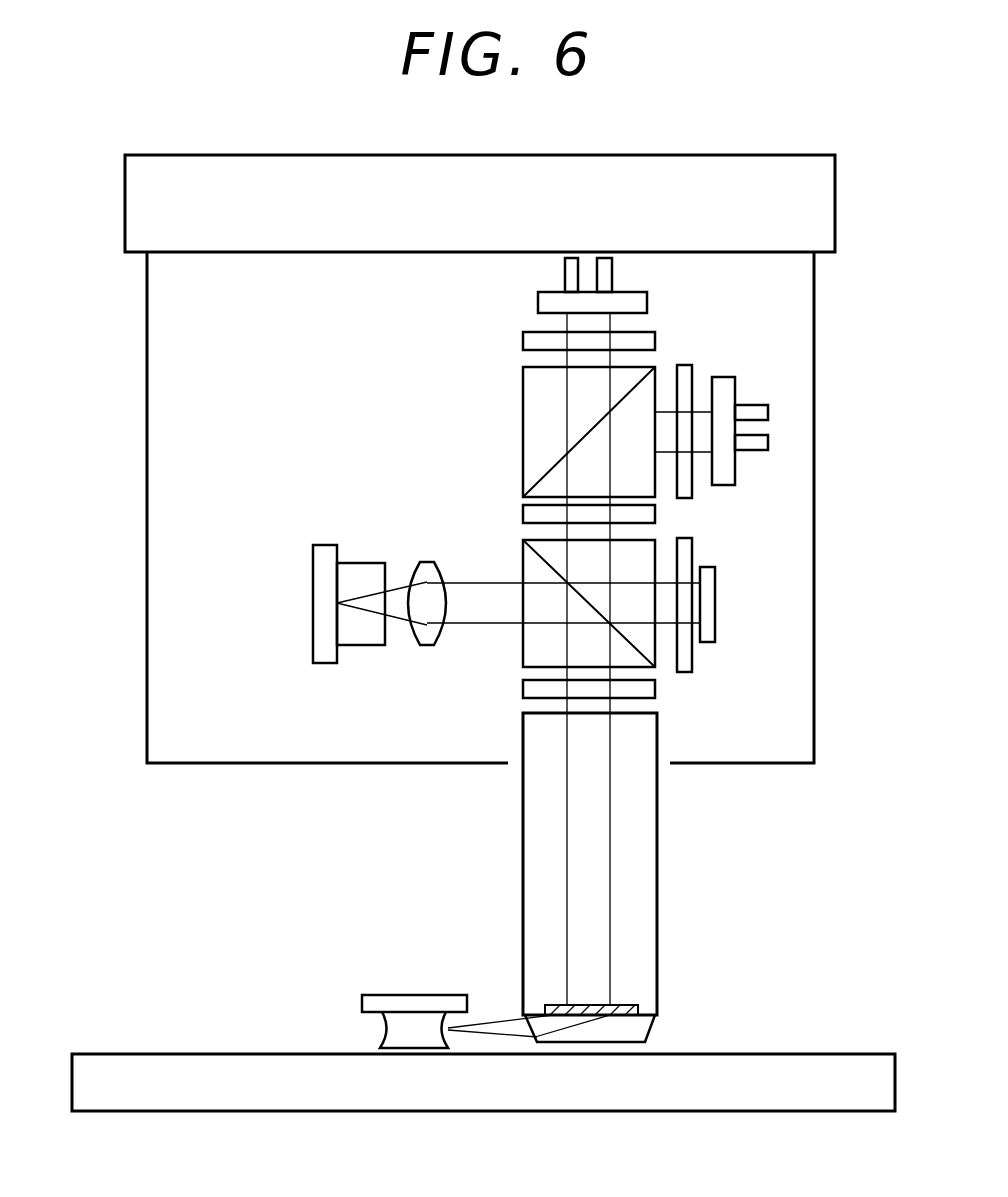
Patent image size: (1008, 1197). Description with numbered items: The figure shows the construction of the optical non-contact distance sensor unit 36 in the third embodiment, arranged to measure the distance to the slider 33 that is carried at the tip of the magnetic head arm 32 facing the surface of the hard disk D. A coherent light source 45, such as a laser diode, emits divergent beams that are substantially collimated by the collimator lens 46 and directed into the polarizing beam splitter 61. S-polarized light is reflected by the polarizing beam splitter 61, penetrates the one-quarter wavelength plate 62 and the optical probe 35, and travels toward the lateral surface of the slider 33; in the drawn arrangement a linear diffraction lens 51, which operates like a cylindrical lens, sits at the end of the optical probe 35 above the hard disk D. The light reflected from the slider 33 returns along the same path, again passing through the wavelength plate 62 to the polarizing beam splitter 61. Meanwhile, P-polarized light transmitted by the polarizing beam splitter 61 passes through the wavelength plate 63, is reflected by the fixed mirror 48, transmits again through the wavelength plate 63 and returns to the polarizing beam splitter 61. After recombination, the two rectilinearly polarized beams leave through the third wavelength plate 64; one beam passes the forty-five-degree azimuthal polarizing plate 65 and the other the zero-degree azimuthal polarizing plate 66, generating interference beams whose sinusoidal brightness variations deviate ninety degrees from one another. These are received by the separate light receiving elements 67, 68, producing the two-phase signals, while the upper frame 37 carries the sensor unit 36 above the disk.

The upper frame plate 37 is at (837, 178).
The optical non-contact distance sensor unit 36 is at (814, 305).
The light receiving element 67 is at (648, 298).
The polarizing plate 65 is at (523, 338).
The polarizing plate 66 is at (686, 365).
The light receiving element 68 is at (730, 377).
The ¼ wavelength plate 64 is at (520, 506).
The polarizing beam splitter 61 is at (657, 668).
The ¼ wavelength plate 63 is at (688, 539).
The mirror 48 is at (716, 581).
The ¼ wavelength plate 62 is at (523, 689).
The coherent light source 45 is at (330, 545).
The collimator lens 46 is at (426, 562).
The optical probe 35 is at (657, 858).
The linear diffraction lens 51 is at (625, 1005).
The magnetic head arm 32 is at (430, 995).
The slider 33 is at (385, 1030).
The hard disk D is at (841, 1057).